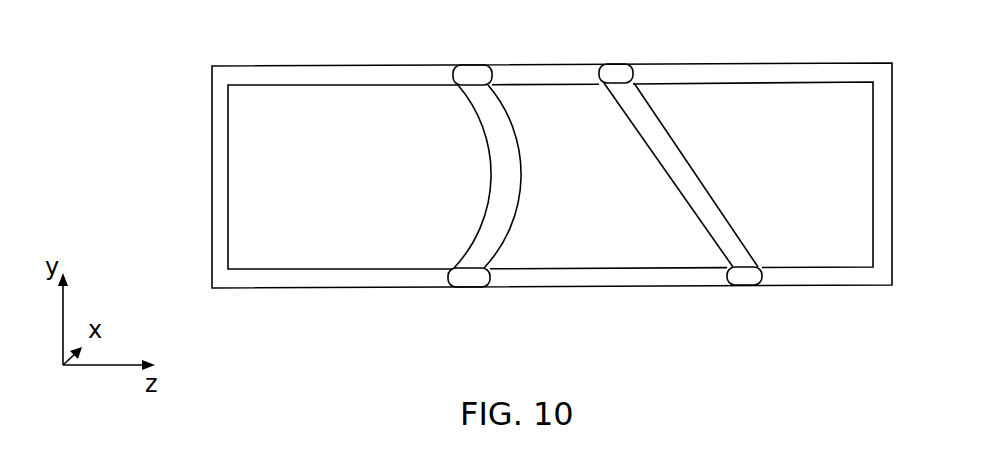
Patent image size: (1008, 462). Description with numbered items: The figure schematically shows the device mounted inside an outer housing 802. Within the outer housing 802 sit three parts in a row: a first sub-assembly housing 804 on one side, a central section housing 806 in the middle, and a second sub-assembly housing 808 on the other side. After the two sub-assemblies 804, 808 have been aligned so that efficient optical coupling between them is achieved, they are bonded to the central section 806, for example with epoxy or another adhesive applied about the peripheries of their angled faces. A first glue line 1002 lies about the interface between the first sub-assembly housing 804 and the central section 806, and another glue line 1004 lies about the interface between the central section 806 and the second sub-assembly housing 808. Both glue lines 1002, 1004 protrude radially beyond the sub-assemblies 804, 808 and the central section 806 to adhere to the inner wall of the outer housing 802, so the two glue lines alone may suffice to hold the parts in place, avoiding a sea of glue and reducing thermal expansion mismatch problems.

The outer housing 802 is at (852, 285).
The first sub-assembly housing 804 is at (330, 85).
The central section housing 806 is at (553, 83).
The second sub-assembly housing 808 is at (768, 82).
The first glue line 1002 is at (452, 278).
The glue line 1004 is at (730, 282).